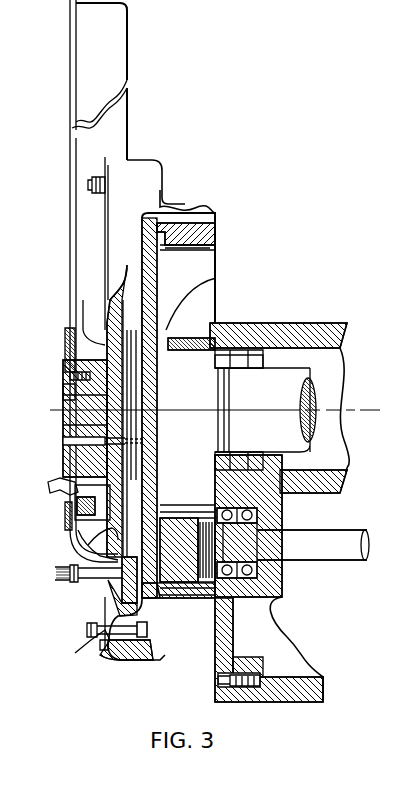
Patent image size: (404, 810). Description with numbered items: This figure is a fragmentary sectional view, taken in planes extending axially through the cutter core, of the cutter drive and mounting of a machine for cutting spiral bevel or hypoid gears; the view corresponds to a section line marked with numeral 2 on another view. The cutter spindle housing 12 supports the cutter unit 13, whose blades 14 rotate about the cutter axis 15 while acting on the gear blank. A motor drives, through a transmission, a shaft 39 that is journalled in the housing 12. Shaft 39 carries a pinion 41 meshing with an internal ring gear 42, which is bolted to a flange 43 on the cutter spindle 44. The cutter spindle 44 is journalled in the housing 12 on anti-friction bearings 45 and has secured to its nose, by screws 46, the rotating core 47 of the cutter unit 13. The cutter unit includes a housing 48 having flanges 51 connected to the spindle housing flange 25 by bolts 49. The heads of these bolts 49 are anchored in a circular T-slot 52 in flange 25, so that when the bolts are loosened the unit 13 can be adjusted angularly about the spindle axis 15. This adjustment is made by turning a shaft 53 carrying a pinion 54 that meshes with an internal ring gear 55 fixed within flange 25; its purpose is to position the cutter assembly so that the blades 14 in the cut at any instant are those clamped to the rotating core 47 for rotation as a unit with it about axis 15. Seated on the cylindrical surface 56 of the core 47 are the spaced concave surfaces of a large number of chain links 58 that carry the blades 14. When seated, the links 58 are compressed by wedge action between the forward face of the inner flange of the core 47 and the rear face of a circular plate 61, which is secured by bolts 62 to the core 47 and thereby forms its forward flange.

The brake assembly 2 is at (5, 384).
The cutter spindle housing 12 is at (270, 340).
The cutter unit 13 is at (66, 150).
The blades 14 is at (58, 488).
The cutter axis 15 is at (355, 412).
The spindle housing flange 25 is at (145, 652).
The shaft 39 is at (313, 548).
The pinion 41 is at (190, 556).
The internal ring gear 42 is at (216, 234).
The flange 43 is at (216, 278).
The cutter spindle 44 is at (262, 410).
The anti-friction bearings 45 is at (200, 343).
The screws 46 is at (70, 444).
The rotating core 47 is at (68, 412).
The housing 48 is at (118, 56).
The bolts 49 is at (90, 184).
The flanges 51 is at (108, 228).
The circular T-slot 52 is at (128, 653).
The shaft 53 is at (92, 578).
The pinion 54 is at (115, 588).
The internal ring gear 55 is at (110, 603).
The cylindrical surface 56 is at (70, 337).
The chain links 58 is at (68, 503).
The circular plate 61 is at (68, 392).
The bolts 62 is at (66, 372).